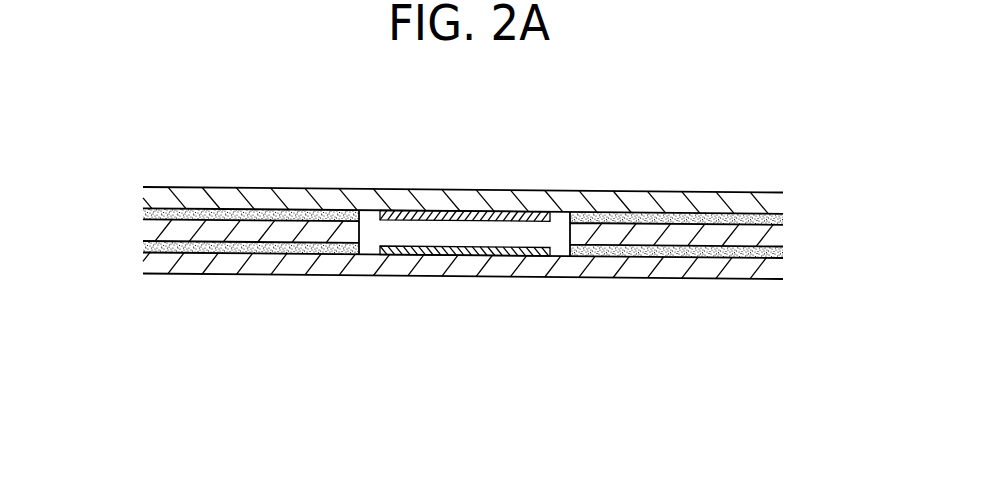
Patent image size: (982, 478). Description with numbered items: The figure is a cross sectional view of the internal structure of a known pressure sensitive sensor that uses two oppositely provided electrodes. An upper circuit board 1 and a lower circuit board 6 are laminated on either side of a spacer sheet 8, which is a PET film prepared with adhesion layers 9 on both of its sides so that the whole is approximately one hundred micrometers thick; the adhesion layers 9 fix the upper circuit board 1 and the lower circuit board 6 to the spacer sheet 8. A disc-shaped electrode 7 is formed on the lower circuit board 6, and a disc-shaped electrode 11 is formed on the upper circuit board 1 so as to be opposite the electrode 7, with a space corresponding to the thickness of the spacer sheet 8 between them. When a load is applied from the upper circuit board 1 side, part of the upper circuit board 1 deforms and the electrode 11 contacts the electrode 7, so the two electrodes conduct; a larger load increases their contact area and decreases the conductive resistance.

The upper circuit board 1 is at (156, 204).
The lower circuit board 6 is at (152, 257).
The electrode 7 is at (407, 253).
The spacer sheet 8 is at (152, 226).
The adhesion layers 9 is at (277, 250).
The electrode 11 is at (445, 217).